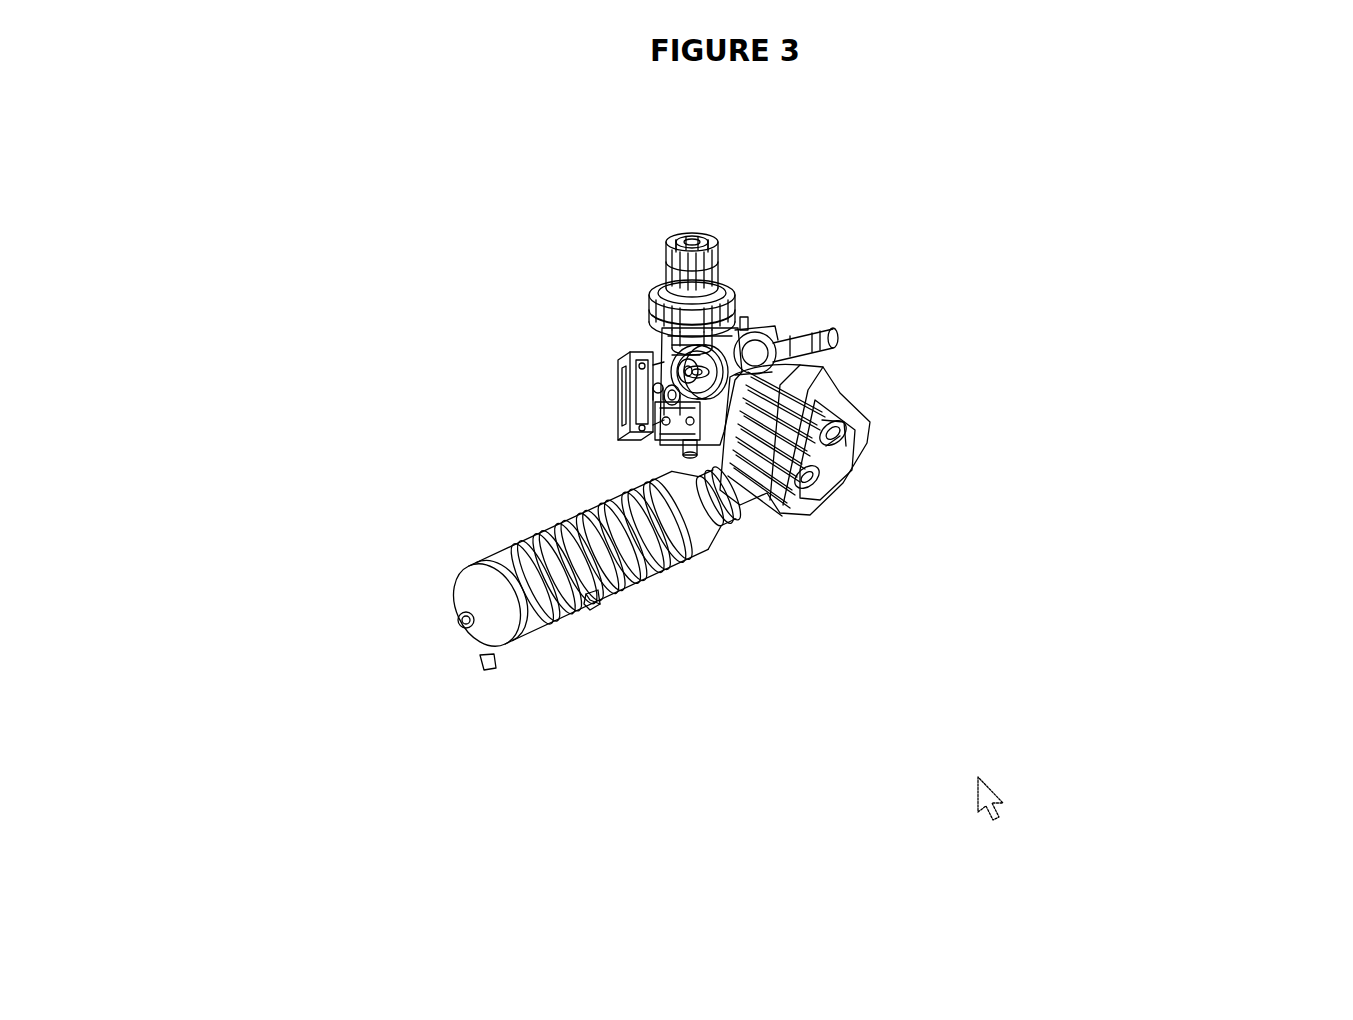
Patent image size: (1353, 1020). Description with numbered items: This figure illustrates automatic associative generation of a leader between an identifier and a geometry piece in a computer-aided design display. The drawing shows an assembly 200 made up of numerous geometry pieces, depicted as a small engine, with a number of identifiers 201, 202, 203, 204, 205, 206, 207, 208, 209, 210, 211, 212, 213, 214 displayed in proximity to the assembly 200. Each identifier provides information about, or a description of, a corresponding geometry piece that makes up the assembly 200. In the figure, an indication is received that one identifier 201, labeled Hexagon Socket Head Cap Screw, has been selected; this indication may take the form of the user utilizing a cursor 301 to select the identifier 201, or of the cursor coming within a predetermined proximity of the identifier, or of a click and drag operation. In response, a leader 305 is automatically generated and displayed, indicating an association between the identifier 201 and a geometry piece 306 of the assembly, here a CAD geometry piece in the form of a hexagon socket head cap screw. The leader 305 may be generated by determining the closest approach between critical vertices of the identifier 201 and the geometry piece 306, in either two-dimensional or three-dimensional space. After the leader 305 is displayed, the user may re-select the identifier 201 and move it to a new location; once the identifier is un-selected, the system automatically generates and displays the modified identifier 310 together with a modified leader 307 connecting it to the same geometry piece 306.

The assembly 200 is at (620, 255).
The identifier 201 is at (1200, 125).
The identifier 202 is at (1005, 193).
The identifier 203 is at (1103, 308).
The identifier 204 is at (1088, 412).
The identifier 205 is at (1163, 493).
The identifier 206 is at (1160, 578).
The identifier 207 is at (948, 658).
The identifier 208 is at (443, 768).
The identifier 209 is at (243, 680).
The identifier 210 is at (265, 578).
The identifier 211 is at (233, 497).
The identifier 212 is at (282, 392).
The identifier 213 is at (292, 290).
The identifier 214 is at (530, 138).
The cursor 301 is at (1093, 170).
The leader 305 is at (765, 160).
The geometry piece 306 is at (647, 395).
The modified leader 307 is at (707, 613).
The modified identifier 310 is at (1133, 757).